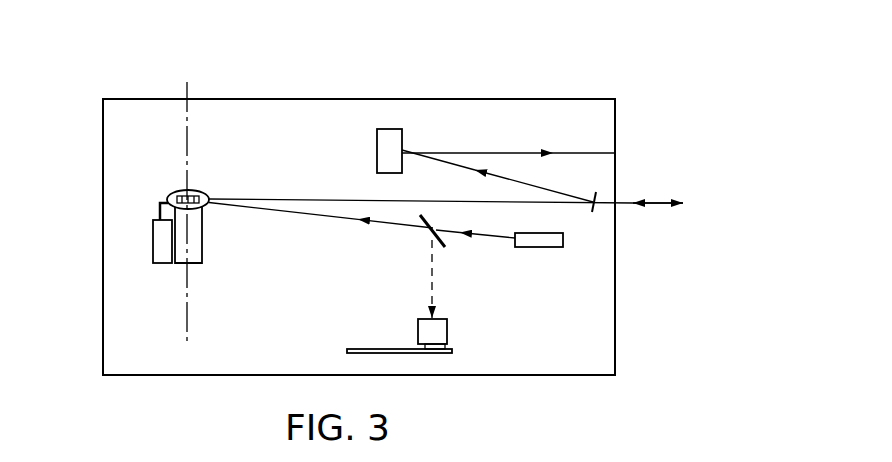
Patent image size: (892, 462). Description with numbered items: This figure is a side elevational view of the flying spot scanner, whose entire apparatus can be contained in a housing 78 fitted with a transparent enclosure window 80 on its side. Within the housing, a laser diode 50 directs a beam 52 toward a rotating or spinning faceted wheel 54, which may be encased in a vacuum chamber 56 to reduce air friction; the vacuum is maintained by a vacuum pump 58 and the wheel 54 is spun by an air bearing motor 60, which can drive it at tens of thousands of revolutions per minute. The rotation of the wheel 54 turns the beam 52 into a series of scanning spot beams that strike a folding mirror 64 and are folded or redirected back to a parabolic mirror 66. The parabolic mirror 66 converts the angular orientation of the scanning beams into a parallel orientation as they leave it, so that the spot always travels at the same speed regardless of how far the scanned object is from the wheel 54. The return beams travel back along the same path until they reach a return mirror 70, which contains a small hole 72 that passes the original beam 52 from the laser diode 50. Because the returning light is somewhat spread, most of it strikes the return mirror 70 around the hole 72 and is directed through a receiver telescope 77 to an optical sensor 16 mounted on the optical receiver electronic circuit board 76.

The housing 78 is at (483, 99).
The transparent enclosure window 80 is at (616, 335).
The faceted wheel 54 is at (197, 189).
The vacuum chamber 56 is at (181, 189).
The vacuum pump 58 is at (153, 243).
The air bearing motor 60 is at (202, 243).
The parabolic mirror 66 is at (377, 143).
The folding mirror 64 is at (593, 213).
The return mirror 70 is at (428, 217).
The small hole 72 is at (428, 232).
The beam 52 is at (487, 237).
The laser diode 50 is at (545, 248).
The optical receiver electronic circuit board 76 is at (367, 349).
The receiver telescope 77 is at (447, 330).
The optical sensor 16 is at (445, 347).